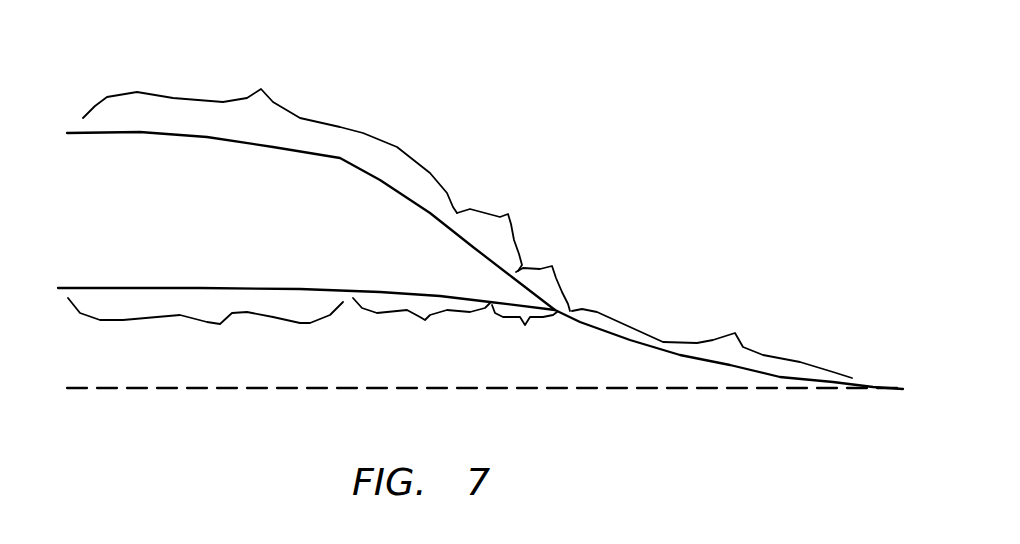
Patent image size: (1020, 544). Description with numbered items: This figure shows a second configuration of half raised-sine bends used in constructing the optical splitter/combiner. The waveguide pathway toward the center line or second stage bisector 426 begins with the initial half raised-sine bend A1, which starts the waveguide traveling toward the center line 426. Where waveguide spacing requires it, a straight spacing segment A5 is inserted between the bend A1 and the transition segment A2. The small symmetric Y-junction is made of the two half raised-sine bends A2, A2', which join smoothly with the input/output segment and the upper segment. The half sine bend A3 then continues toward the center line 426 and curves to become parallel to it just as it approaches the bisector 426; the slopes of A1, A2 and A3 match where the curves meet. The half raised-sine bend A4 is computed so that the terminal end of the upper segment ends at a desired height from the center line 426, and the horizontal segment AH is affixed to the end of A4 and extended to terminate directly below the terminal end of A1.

The second stage bisector 426 is at (130, 386).
The initial half raised-sine bend A1 is at (270, 129).
The straight segment A5 is at (499, 227).
The transition segment A2 is at (555, 273).
The half sine bend A3 is at (712, 339).
The horizontal segment AH is at (205, 329).
The half raised-sine bend A4 is at (421, 326).
The half raised-sine bend A2' is at (524, 329).